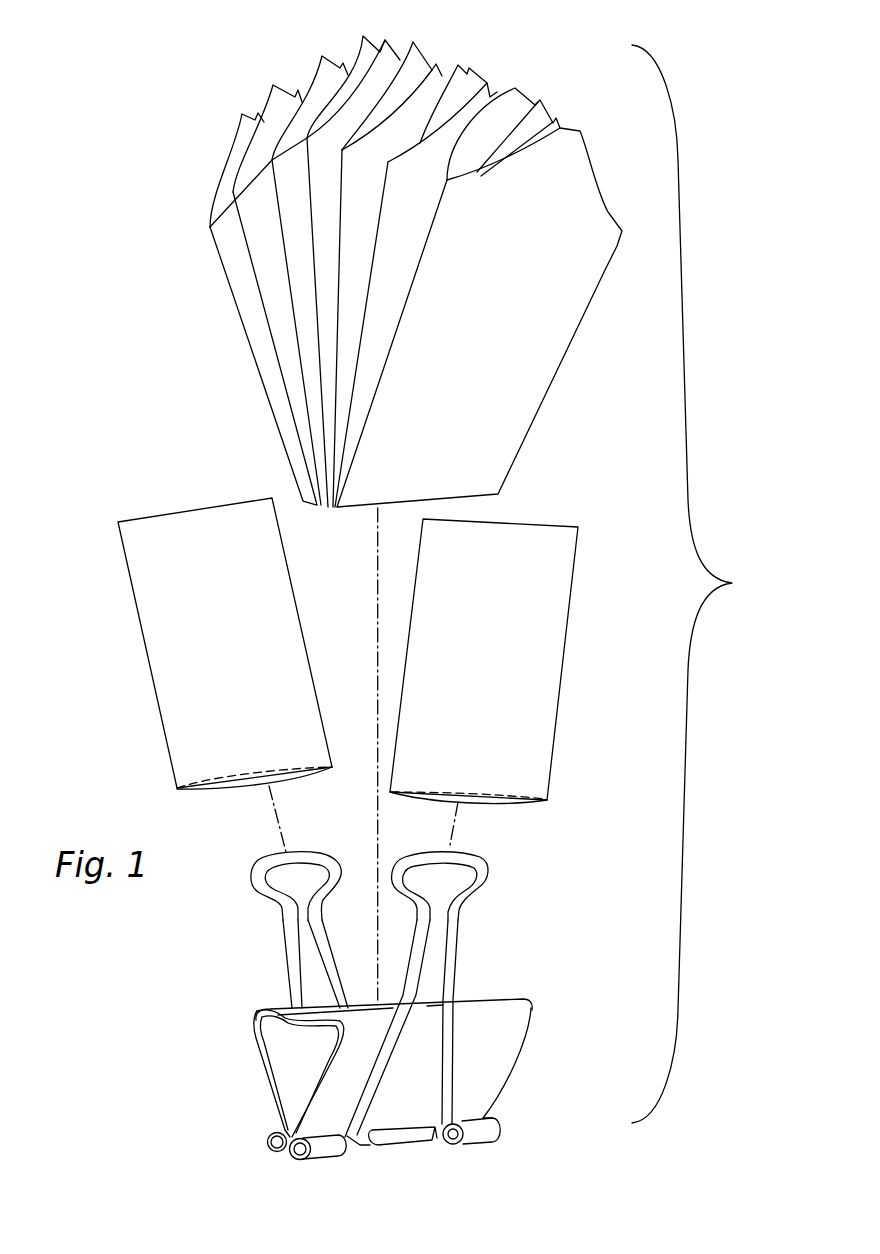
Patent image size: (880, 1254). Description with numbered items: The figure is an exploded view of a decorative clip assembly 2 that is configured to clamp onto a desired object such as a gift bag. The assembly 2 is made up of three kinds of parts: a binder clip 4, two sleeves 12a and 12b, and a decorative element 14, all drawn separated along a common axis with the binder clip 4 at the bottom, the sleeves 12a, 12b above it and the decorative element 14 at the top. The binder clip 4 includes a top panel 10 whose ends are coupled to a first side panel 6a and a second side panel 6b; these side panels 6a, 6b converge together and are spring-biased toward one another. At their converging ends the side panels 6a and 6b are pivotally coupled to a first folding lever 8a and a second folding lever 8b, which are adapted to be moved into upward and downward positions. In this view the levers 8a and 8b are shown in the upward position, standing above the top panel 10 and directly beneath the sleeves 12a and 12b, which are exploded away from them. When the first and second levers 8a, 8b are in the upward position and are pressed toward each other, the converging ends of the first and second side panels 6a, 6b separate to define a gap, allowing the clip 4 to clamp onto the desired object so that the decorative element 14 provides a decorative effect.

The decorative clip assembly 2 is at (732, 583).
The binder clip 4 is at (338, 1006).
The first side panel 6a is at (507, 1048).
The second side panel 6b is at (274, 1057).
The first folding lever 8a is at (450, 928).
The second folding lever 8b is at (293, 952).
The top panel 10 is at (358, 1005).
The sleeve 12a is at (548, 647).
The sleeve 12b is at (163, 647).
The decorative element 14 is at (485, 98).